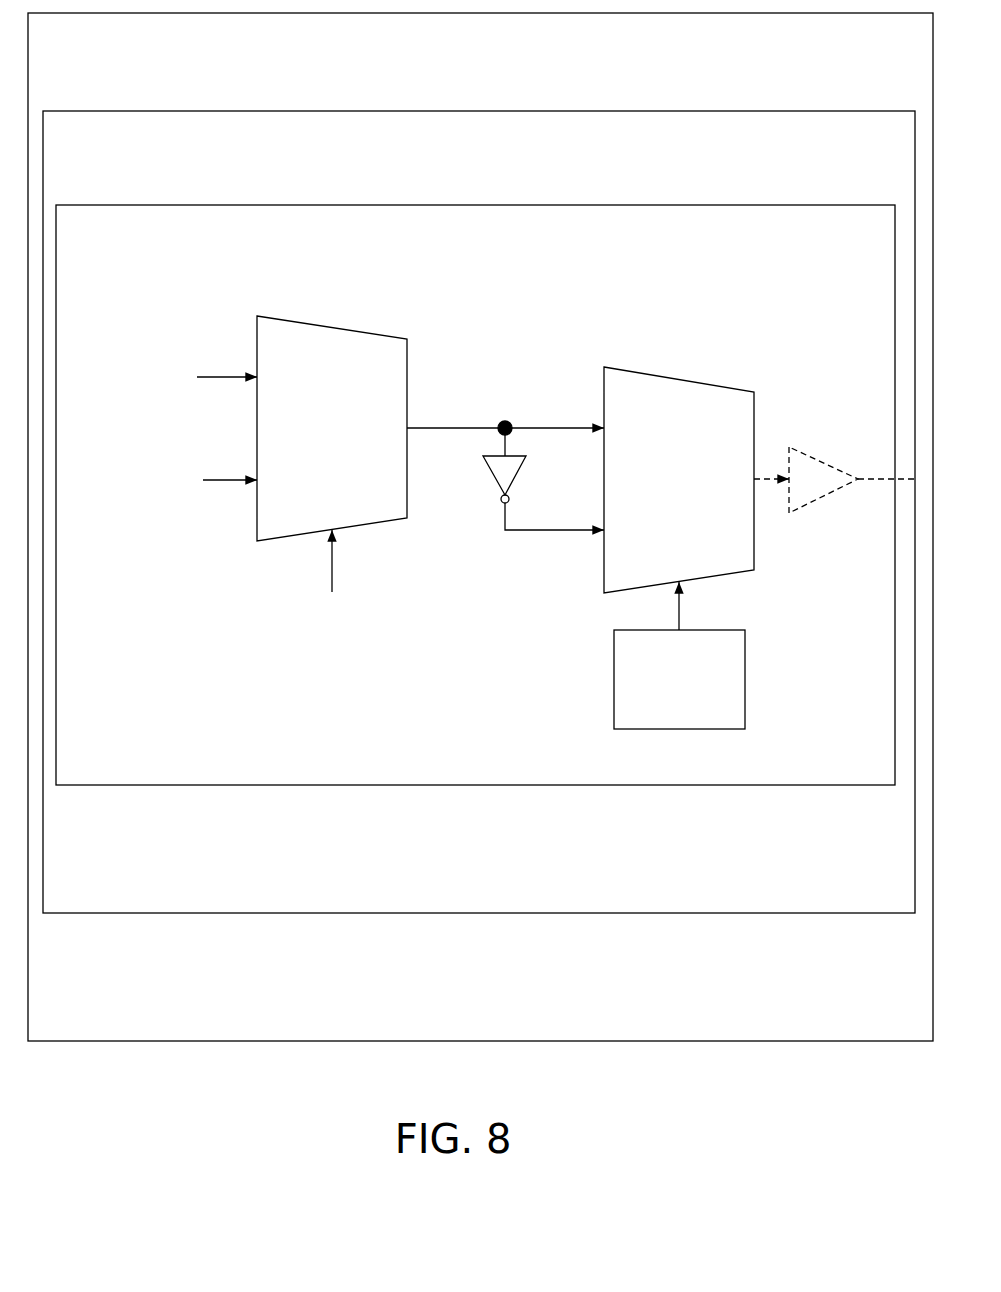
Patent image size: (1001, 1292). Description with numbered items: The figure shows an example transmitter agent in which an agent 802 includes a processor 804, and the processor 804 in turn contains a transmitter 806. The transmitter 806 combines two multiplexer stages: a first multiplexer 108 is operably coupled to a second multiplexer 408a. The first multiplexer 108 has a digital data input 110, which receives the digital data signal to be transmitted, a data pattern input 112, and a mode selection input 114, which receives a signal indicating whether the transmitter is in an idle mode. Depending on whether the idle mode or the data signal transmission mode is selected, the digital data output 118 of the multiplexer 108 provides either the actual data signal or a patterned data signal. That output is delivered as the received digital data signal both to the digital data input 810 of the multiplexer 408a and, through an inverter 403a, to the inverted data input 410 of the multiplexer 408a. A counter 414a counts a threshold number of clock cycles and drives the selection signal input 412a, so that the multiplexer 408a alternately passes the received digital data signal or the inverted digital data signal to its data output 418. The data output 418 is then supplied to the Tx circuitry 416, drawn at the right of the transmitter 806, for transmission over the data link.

The agent 802 is at (461, 84).
The processor 804 is at (461, 174).
The transmitter 806 is at (461, 267).
The multiplexer 108 is at (314, 451).
The digital data input 110 is at (193, 374).
The data pattern input 112 is at (167, 478).
The mode selection input 114 is at (332, 605).
The digital data output 118 is at (420, 430).
The digital data input 810 is at (565, 428).
The inverter 403a is at (523, 462).
The inverted data input 410 is at (547, 532).
The multiplexer 408a is at (656, 503).
The Tx circuitry 416 is at (794, 488).
The data output 418 is at (772, 482).
The selection signal input 412a is at (680, 602).
The counter 414a is at (654, 703).